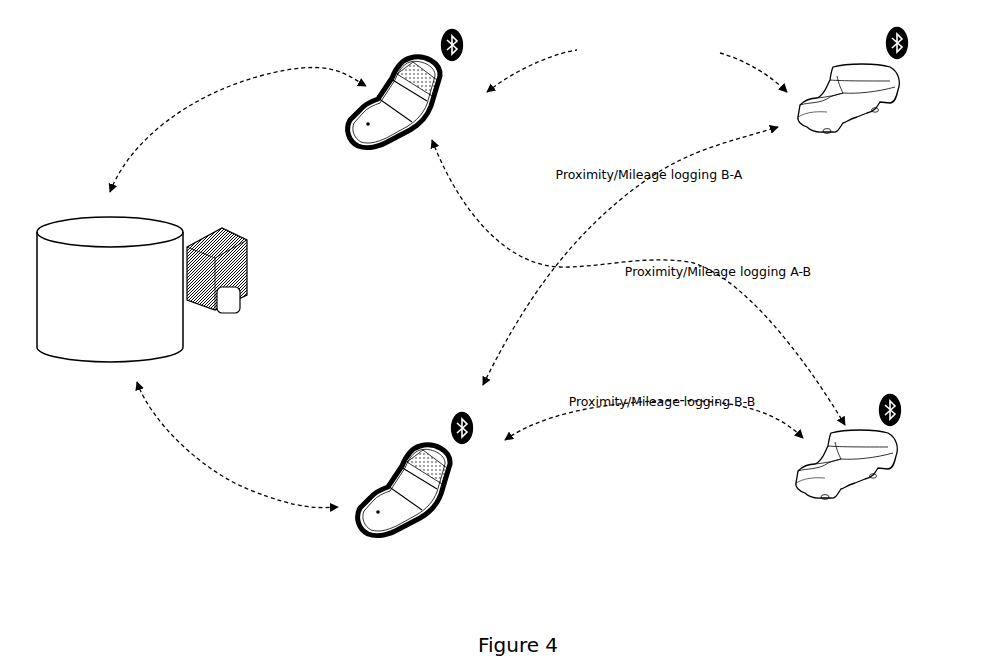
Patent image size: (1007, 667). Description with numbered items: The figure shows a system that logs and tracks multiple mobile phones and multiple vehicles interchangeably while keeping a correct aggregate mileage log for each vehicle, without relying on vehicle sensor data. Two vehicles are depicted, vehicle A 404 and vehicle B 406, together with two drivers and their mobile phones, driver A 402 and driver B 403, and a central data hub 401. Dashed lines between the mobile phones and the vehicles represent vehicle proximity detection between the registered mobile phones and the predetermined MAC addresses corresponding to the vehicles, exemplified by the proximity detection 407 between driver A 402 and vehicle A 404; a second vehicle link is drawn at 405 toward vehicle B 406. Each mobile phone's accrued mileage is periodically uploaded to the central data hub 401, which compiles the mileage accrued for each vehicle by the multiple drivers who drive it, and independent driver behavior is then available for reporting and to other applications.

The central data hub 401 is at (103, 222).
The driver A mobile phone 402 is at (357, 146).
The driver B mobile phone 403 is at (378, 534).
The vehicle A 404 is at (826, 133).
The vehicle B 405 is at (815, 497).
The vehicle B 406 is at (268, 73).
The proximity detection 407 is at (745, 60).